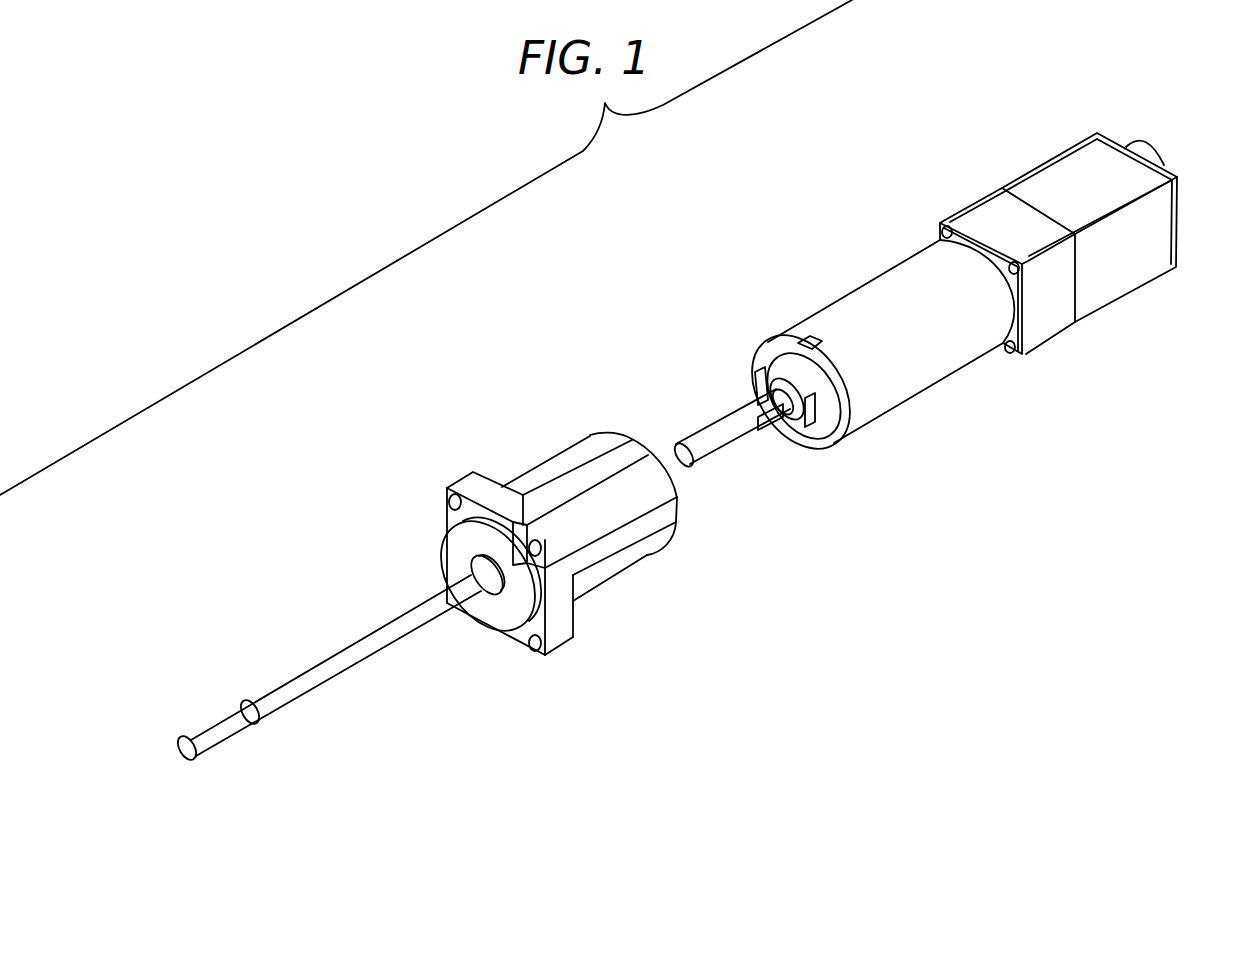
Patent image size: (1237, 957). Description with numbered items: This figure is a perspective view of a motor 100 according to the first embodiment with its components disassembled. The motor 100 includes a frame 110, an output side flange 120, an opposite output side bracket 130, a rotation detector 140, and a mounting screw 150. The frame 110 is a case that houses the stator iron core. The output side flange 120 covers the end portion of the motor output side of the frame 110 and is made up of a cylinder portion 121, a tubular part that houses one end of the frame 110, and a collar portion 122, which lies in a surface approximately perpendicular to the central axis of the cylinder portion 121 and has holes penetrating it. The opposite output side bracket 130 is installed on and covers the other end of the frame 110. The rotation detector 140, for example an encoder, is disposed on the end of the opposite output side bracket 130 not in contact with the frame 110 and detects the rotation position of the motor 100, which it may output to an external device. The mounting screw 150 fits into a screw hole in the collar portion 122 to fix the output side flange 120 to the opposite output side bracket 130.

The motor 100 is at (653, 368).
The frame 110 is at (917, 362).
The output side flange 120 is at (703, 688).
The cylinder portion 121 is at (625, 557).
The collar portion 122 is at (523, 632).
The opposite output side bracket 130 is at (1043, 325).
The rotation detector 140 is at (1058, 180).
The mounting screw 150 is at (235, 723).